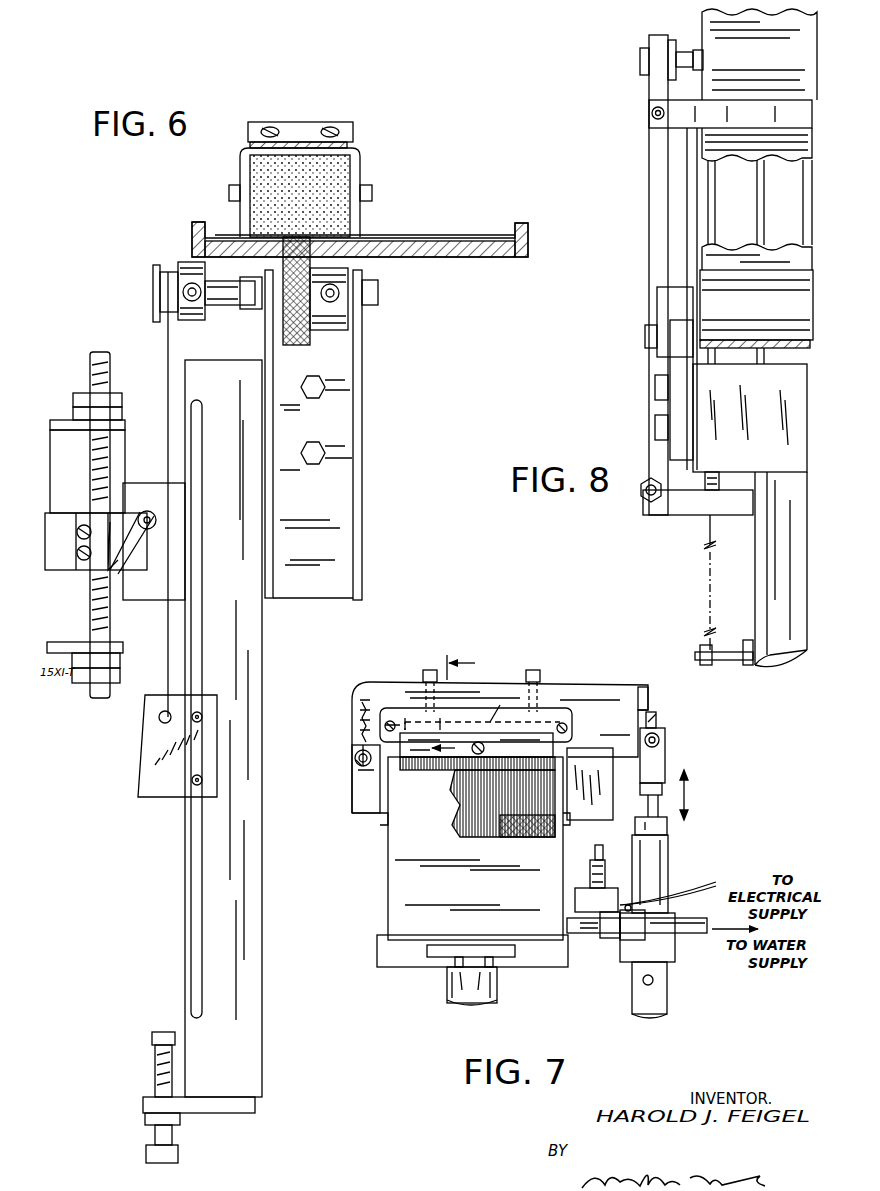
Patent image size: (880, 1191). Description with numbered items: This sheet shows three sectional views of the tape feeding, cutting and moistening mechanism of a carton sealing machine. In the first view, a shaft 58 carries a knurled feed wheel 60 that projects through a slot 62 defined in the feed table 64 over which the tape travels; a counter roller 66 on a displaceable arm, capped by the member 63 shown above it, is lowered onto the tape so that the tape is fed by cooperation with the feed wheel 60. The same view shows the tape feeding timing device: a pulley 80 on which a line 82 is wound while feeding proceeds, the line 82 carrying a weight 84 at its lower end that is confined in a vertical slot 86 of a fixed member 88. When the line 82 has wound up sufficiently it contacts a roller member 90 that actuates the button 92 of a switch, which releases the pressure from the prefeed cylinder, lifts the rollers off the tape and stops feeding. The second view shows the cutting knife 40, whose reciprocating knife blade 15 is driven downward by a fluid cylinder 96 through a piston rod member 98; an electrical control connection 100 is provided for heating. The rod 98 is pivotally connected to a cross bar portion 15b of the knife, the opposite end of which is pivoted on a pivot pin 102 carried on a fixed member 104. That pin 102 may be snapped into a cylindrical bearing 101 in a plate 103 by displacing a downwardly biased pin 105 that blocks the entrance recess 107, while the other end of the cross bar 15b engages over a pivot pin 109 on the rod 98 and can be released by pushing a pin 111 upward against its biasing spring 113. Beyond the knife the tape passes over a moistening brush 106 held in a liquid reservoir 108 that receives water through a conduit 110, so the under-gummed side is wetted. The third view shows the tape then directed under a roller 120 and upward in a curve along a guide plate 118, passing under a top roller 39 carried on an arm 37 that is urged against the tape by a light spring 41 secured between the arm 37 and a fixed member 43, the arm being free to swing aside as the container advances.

In FIG. 8, the arm 37 is at (656, 156).
In FIG. 8, the roller 39 is at (720, 45).
In FIG. 8, the light spring 41 is at (704, 548).
In FIG. 8, the fixed member 43 is at (730, 662).
In FIG. 6, the shaft 58 is at (243, 308).
In FIG. 6, the knurled feed wheel 60 is at (300, 345).
In FIG. 6, the slot 62 is at (262, 236).
In FIG. 6, the clamp block 63 is at (298, 140).
In FIG. 6, the feed table 64 is at (455, 258).
In FIG. 6, the counter roller 66 is at (330, 185).
In FIG. 6, the pulley 80 is at (153, 290).
In FIG. 6, the line 82 is at (165, 688).
In FIG. 6, the weight 84 is at (156, 790).
In FIG. 6, the vertical slot 86 is at (195, 955).
In FIG. 6, the fixed member 88 is at (248, 1051).
In FIG. 6, the roller member 90 is at (150, 512).
In FIG. 6, the button 92 is at (112, 575).
In FIG. 7, the reciprocating knife blade 15 is at (482, 706).
In FIG. 7, the cross bar portion 15b is at (641, 700).
In FIG. 7, the cutting knife 40 is at (508, 690).
In FIG. 7, the fluid cylinder 96 is at (650, 876).
In FIG. 7, the piston rod member 98 is at (662, 812).
In FIG. 7, the electrical control connection 100 is at (705, 886).
In FIG. 7, the cylindrical bearing 101 is at (365, 792).
In FIG. 7, the pivot pin 102 is at (358, 768).
In FIG. 7, the plate 103 is at (390, 838).
In FIG. 7, the fixed member 104 is at (582, 810).
In FIG. 7, the downwardly biased pin 105 is at (352, 744).
In FIG. 7, the moistening brush 106 is at (482, 802).
In FIG. 7, the entrance recess 107 is at (355, 760).
In FIG. 7, the liquid reservoir 108 is at (410, 948).
In FIG. 7, the pivot pin 109 is at (660, 746).
In FIG. 7, the conduit 110 is at (692, 936).
In FIG. 7, the pin 111 is at (665, 738).
In FIG. 7, the biasing spring 113 is at (664, 722).
In FIG. 8, the guide plate 118 is at (812, 200).
In FIG. 8, the roller 120 is at (708, 278).